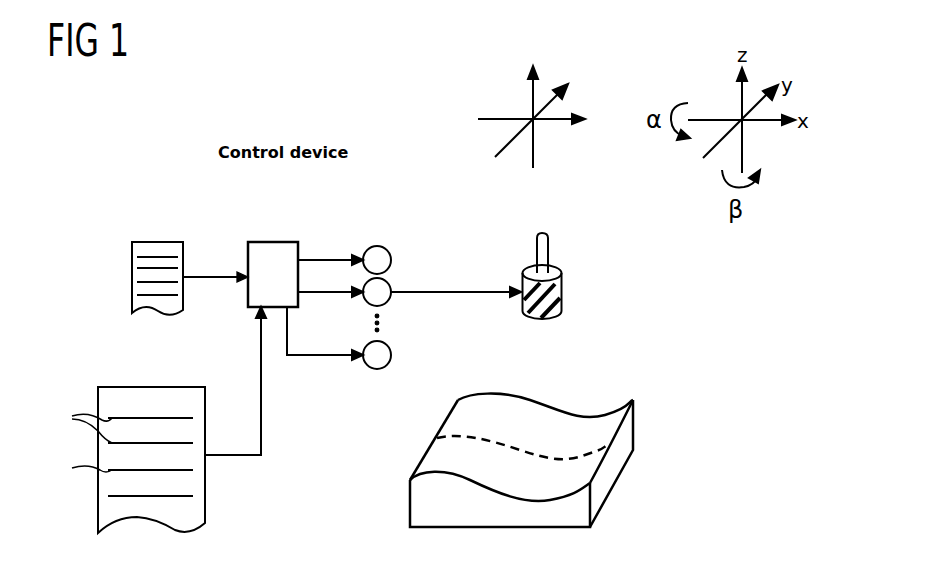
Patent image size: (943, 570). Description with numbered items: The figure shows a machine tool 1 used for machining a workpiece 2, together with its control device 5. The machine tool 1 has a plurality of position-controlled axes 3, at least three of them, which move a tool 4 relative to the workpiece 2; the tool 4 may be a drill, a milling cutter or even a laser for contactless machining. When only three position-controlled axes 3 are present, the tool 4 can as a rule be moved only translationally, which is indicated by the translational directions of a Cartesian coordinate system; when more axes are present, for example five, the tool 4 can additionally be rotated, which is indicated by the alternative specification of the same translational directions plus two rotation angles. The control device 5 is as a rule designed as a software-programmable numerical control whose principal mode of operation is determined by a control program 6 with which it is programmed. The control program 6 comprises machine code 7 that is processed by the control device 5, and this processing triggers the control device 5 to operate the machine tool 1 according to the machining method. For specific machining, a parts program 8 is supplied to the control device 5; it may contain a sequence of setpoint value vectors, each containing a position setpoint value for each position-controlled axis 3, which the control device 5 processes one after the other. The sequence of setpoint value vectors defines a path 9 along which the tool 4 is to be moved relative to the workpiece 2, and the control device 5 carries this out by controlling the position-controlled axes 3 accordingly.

The machine tool 1 is at (432, 138).
The workpiece 2 is at (552, 442).
The position-controlled axes 3 is at (378, 246).
The tool 4 is at (562, 289).
The control device 5 is at (272, 242).
The control program 6 is at (161, 242).
The machine code 7 is at (137, 257).
The parts program 8 is at (98, 517).
The path 9 is at (470, 437).